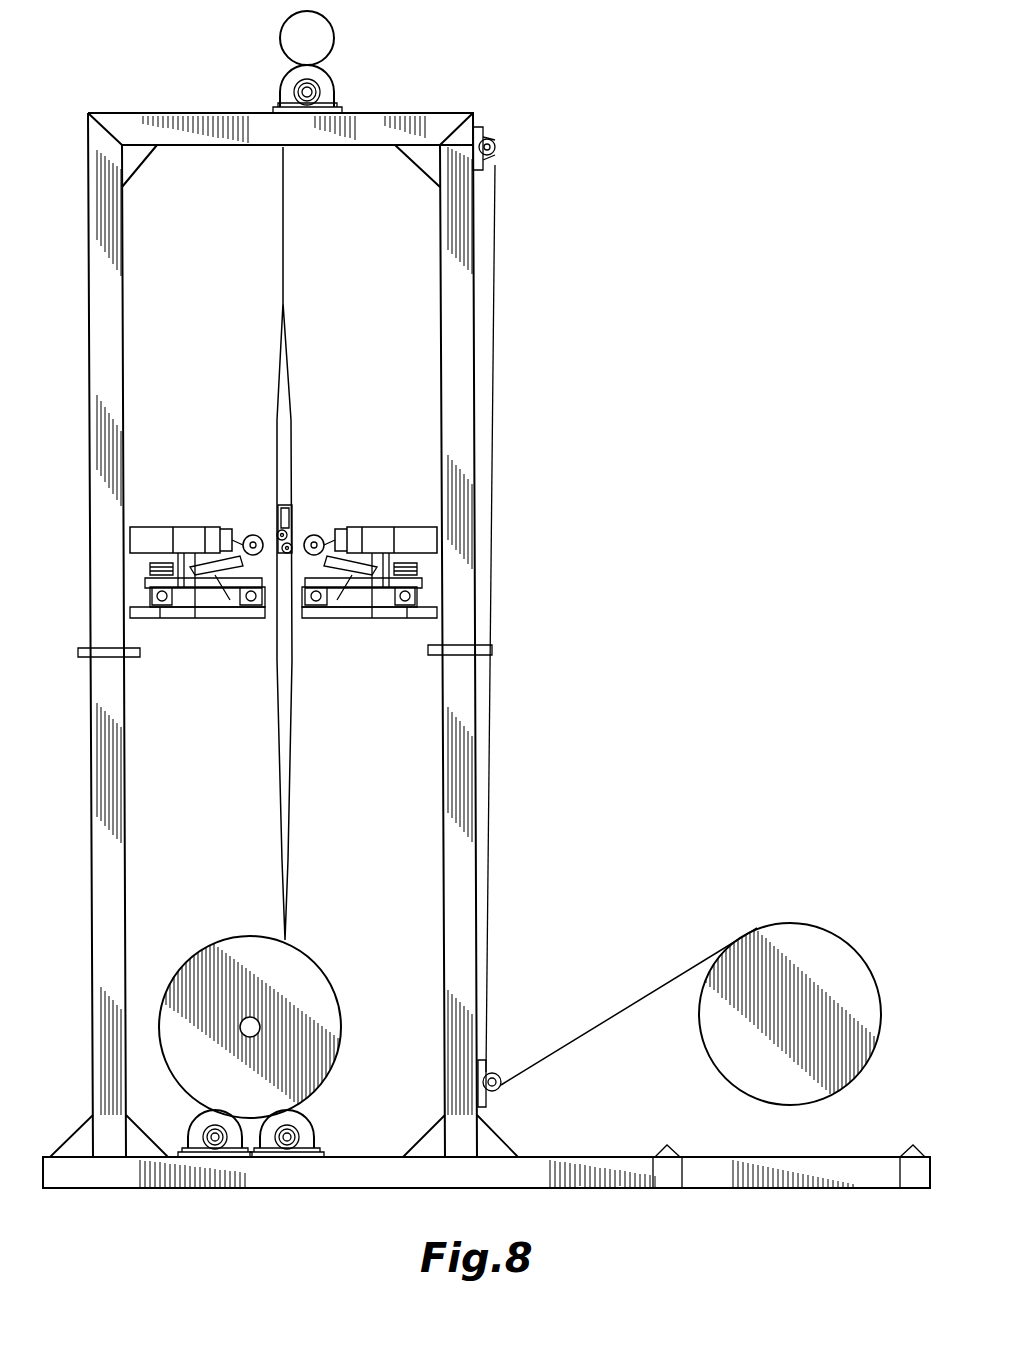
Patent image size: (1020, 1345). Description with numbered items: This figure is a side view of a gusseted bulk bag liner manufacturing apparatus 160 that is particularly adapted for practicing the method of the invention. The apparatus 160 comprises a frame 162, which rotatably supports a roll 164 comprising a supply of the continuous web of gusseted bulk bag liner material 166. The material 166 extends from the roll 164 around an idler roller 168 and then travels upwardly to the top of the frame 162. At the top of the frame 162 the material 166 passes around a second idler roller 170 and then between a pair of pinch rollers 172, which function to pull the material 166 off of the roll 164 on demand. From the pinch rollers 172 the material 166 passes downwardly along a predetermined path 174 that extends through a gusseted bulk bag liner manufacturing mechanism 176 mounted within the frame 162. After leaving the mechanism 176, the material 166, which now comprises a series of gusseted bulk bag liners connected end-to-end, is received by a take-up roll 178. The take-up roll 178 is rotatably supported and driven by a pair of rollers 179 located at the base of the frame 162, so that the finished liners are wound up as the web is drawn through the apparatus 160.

The gusseted bulk bag liner manufacturing apparatus 160 is at (494, 413).
The frame 162 is at (440, 365).
The roll 164 is at (708, 1060).
The gusseted bulk bag liner material 166 is at (636, 1003).
The idler roller 168 is at (495, 1067).
The idler roller 170 is at (497, 165).
The pinch rollers 172 is at (412, 112).
The predetermined path 174 is at (266, 210).
The gusseted bulk bag liner manufacturing mechanism 176 is at (195, 527).
The take-up roll 178 is at (240, 937).
The rollers 179 is at (197, 1117).